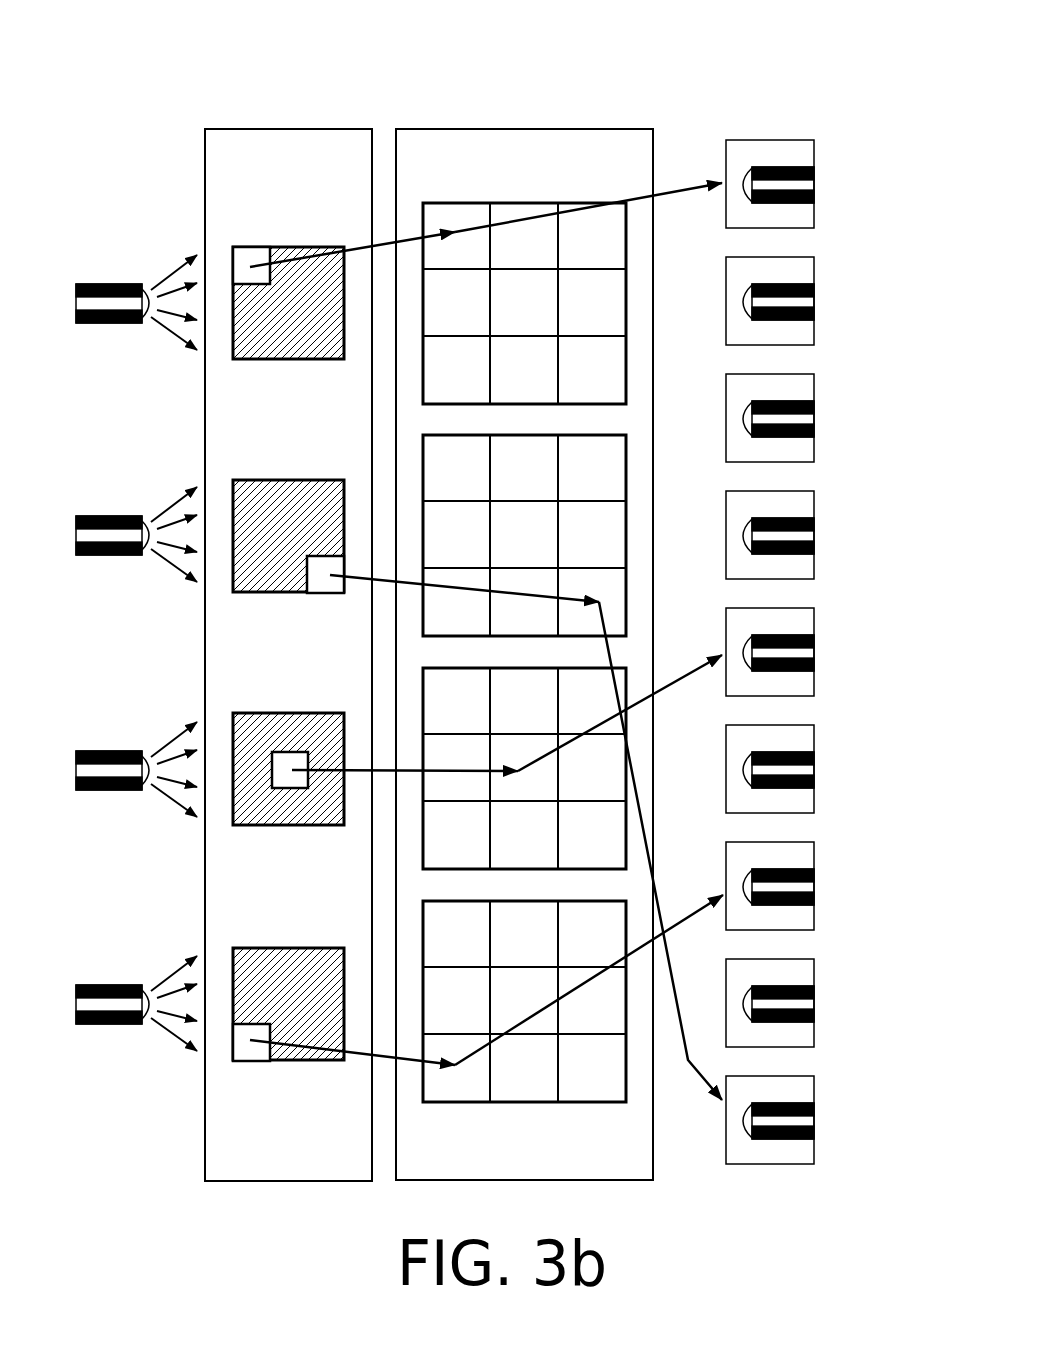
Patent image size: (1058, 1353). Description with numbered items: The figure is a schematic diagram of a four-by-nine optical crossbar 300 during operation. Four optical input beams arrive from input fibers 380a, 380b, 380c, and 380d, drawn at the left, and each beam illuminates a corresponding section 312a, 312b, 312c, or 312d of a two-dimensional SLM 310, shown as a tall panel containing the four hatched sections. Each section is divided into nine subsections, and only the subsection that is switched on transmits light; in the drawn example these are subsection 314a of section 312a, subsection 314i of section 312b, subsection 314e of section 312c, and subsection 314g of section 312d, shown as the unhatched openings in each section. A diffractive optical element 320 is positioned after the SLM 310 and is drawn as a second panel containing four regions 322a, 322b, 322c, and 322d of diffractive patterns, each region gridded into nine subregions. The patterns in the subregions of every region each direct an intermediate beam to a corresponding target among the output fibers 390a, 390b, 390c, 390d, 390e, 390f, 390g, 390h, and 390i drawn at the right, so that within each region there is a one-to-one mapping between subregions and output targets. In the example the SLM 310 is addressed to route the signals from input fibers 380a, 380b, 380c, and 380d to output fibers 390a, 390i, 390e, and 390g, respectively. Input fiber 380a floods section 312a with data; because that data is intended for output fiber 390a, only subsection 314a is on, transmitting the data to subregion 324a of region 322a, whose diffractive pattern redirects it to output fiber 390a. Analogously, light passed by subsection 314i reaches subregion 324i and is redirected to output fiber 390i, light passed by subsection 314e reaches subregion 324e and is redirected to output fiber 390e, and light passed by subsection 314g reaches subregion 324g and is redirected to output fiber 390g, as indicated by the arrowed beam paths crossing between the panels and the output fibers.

The optical crossbar 300 is at (628, 70).
The SLM 310 is at (283, 129).
The diffractive optical element 320 is at (510, 129).
The section 312a is at (300, 360).
The section 312b is at (260, 594).
The section 312c is at (318, 828).
The section 312d is at (318, 1062).
The subsection 314a is at (250, 267).
The subsection 314i is at (322, 580).
The subsection 314e is at (288, 778).
The subsection 314g is at (252, 1050).
The region 322a is at (627, 300).
The region 322b is at (626, 469).
The region 322c is at (626, 813).
The region 322d is at (626, 1072).
The subregion 324a is at (450, 212).
The subregion 324i is at (612, 588).
The subregion 324e is at (517, 752).
The subregion 324g is at (455, 1072).
The input fiber 380a is at (105, 326).
The input fiber 380b is at (105, 558).
The input fiber 380c is at (105, 793).
The input fiber 380d is at (105, 1027).
The output fiber 390a is at (815, 183).
The output fiber 390b is at (815, 300).
The output fiber 390c is at (815, 417).
The output fiber 390d is at (815, 534).
The output fiber 390e is at (815, 651).
The output fiber 390f is at (815, 768).
The output fiber 390g is at (815, 885).
The output fiber 390h is at (815, 1002).
The output fiber 390i is at (815, 1119).